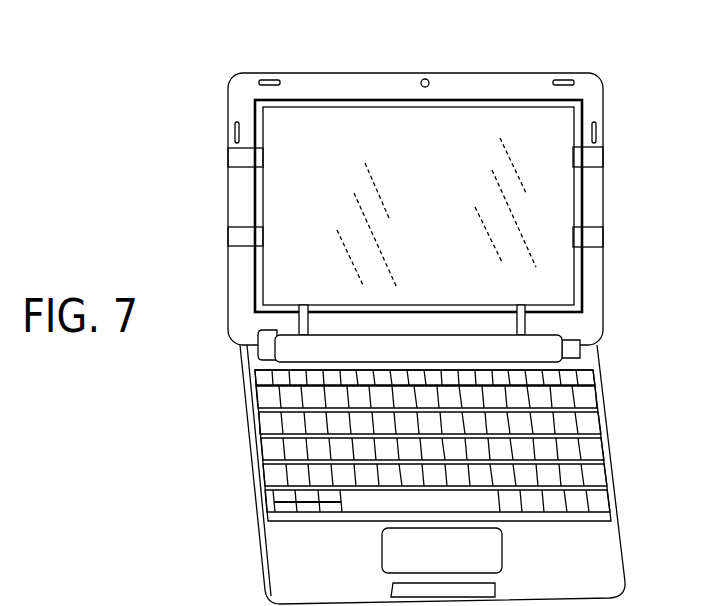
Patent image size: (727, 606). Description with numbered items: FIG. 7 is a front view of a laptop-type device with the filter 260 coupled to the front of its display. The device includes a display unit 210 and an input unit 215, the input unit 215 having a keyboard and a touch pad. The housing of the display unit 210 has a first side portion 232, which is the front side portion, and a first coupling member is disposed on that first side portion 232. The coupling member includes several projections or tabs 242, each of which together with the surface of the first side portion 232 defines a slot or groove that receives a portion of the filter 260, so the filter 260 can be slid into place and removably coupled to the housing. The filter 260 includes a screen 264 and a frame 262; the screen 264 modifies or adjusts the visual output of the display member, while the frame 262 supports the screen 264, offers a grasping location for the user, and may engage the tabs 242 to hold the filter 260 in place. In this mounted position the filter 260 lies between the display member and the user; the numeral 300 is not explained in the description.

The display unit 210 is at (351, 73).
The first side portion 232 is at (464, 85).
The frame 262 is at (501, 103).
The filter 260 is at (303, 203).
The screen 264 is at (557, 208).
The projections or tabs 242 is at (245, 161).
The input unit 215 is at (590, 563).
The computing device 300 is at (90, 605).